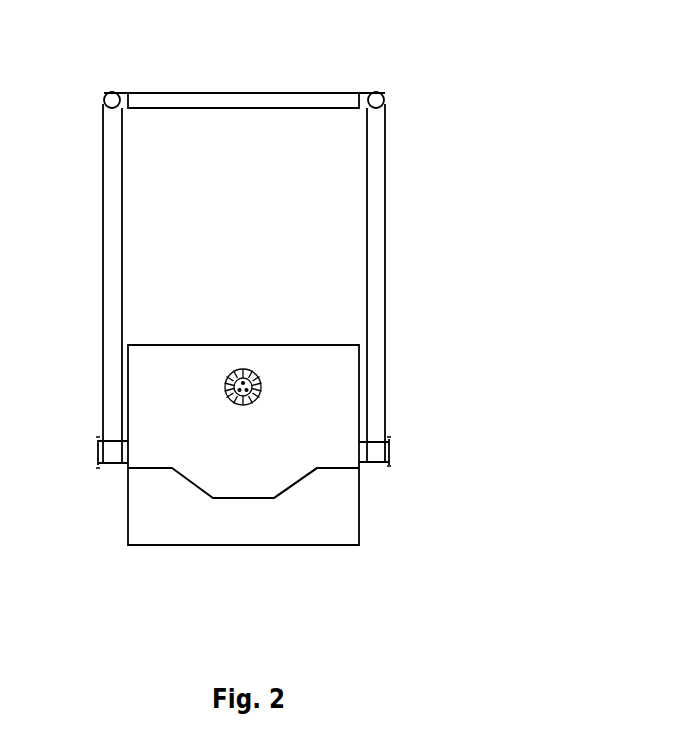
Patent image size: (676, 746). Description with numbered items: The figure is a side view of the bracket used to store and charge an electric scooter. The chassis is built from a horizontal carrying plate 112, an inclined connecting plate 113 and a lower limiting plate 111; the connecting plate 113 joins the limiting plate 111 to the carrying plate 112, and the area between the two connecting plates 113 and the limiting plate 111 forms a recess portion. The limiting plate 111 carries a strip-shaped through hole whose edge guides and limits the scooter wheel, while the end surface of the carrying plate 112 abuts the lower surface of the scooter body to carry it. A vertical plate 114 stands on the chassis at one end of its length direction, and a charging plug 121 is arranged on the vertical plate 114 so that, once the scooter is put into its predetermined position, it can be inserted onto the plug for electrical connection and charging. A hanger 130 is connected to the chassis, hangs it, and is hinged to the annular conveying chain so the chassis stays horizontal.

The hanger 130 is at (283, 103).
The vertical plate 114 is at (352, 393).
The charging plug 121 is at (260, 382).
The carrying plate 112 is at (153, 468).
The limiting plate 111 is at (237, 498).
The connecting plate 113 is at (307, 475).